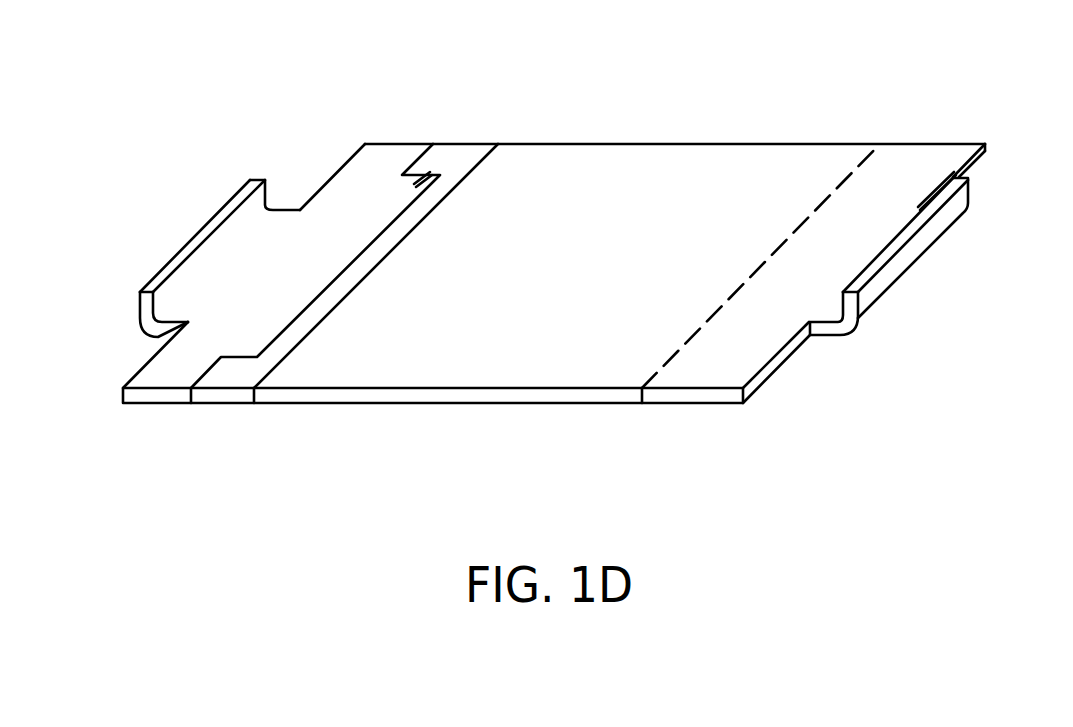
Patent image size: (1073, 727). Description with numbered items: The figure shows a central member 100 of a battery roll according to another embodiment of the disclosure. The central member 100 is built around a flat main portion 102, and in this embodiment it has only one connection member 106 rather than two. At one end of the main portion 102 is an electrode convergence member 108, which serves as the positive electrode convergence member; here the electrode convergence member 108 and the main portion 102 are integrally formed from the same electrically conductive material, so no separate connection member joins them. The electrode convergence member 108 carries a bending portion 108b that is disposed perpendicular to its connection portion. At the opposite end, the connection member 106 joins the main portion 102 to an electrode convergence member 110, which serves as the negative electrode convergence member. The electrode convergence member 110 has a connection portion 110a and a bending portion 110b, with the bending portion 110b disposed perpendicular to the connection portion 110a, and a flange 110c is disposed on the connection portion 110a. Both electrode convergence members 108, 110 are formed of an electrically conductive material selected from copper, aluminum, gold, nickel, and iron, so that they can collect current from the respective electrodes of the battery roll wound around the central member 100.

The central member 100 is at (603, 113).
The main portion 102 is at (528, 395).
The connection member 106 is at (223, 395).
The electrode convergence member 108 is at (908, 162).
The bending portion 108b is at (953, 173).
The electrode convergence member 110 is at (257, 68).
The connection portion 110a is at (373, 163).
The bending portion 110b is at (250, 178).
The flange 110c is at (427, 177).